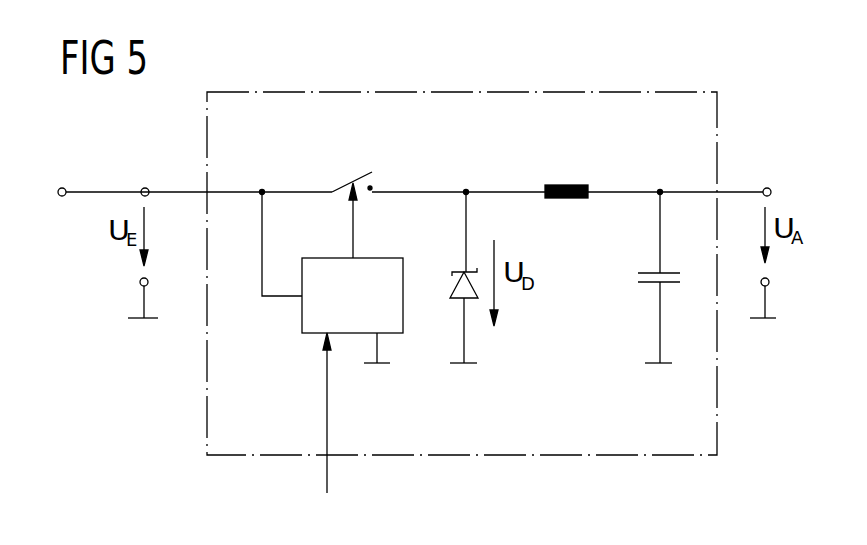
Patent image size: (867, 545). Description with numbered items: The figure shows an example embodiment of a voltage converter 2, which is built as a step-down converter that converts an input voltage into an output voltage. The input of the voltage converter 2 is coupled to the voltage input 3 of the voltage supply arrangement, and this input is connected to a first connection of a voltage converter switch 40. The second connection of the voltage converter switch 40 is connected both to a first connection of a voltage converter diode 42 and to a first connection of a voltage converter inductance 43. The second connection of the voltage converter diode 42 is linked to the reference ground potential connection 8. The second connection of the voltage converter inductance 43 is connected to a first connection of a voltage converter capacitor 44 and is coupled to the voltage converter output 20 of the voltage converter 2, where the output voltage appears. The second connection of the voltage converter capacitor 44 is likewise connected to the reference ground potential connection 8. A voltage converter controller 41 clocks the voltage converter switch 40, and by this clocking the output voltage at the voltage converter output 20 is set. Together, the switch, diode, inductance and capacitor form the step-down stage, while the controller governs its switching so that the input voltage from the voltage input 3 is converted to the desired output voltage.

The voltage converter 2 is at (467, 456).
The voltage input 3 is at (63, 187).
The reference ground potential connection 8 is at (148, 312).
The voltage converter output 20 is at (767, 187).
The voltage converter switch 40 is at (355, 172).
The voltage converter controller 41 is at (300, 312).
The voltage converter diode 42 is at (462, 270).
The voltage converter inductance 43 is at (565, 184).
The voltage converter capacitor 44 is at (638, 278).